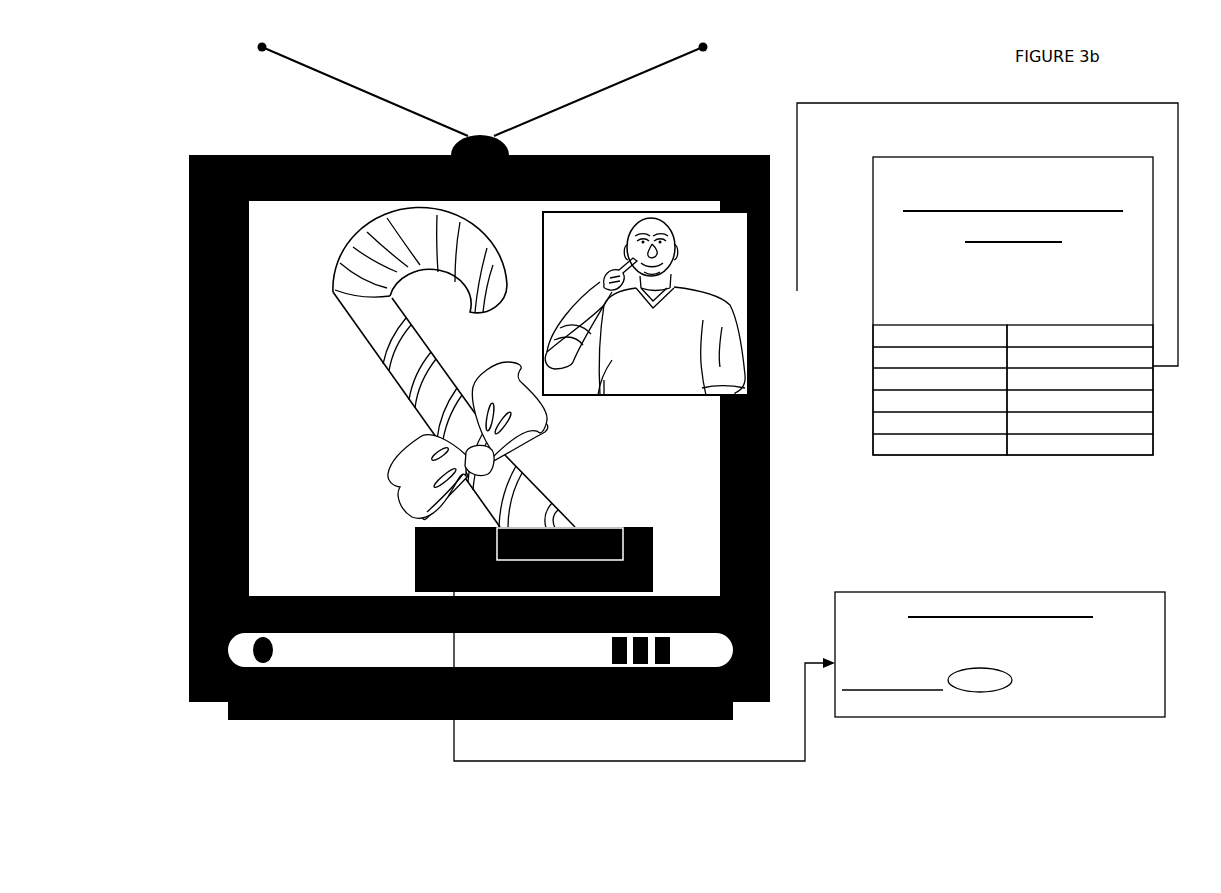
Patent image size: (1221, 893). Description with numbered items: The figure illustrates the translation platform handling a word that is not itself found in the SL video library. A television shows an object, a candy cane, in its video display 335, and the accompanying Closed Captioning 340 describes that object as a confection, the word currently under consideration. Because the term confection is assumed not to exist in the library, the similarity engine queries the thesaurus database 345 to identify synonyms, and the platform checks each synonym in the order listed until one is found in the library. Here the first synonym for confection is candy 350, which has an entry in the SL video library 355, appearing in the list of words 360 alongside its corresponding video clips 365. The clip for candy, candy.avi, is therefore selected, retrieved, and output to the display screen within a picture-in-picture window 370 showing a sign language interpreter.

The video display 335 is at (307, 428).
The Closed Captioning 340 is at (698, 588).
The thesaurus database 345 is at (1125, 620).
The candy 350 is at (861, 408).
The SL video library 355 is at (1113, 240).
The list of words 360 is at (928, 320).
The corresponding video clips 365 is at (1100, 320).
The picture-in-picture window 370 is at (797, 291).